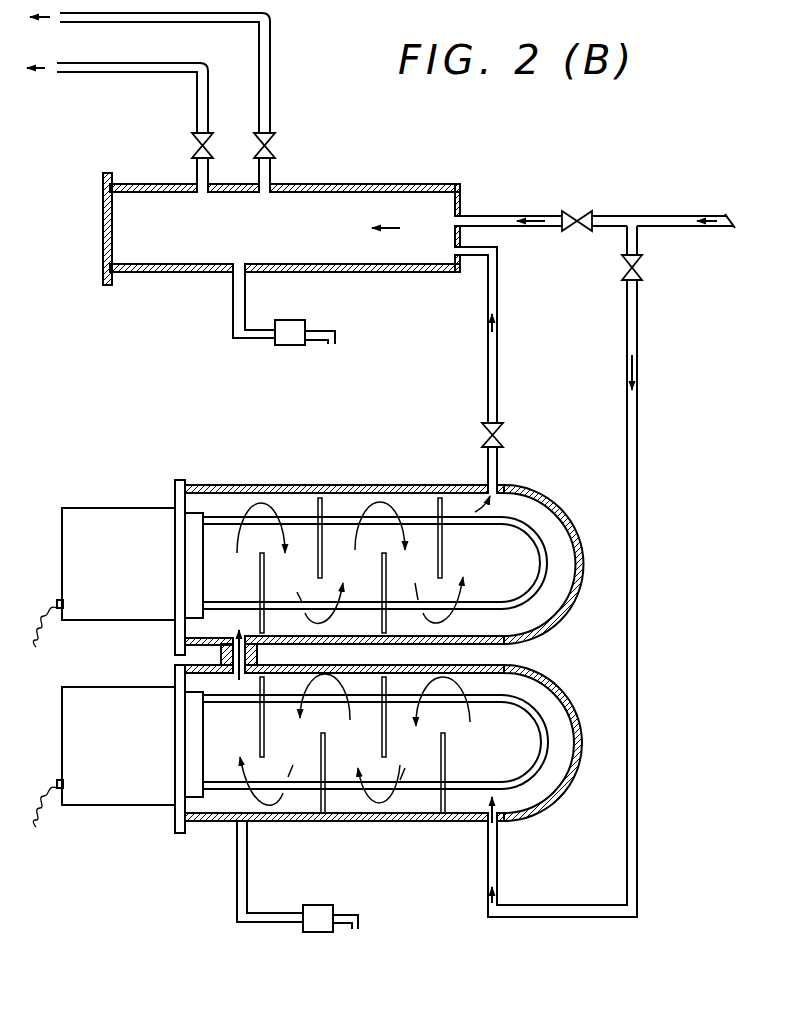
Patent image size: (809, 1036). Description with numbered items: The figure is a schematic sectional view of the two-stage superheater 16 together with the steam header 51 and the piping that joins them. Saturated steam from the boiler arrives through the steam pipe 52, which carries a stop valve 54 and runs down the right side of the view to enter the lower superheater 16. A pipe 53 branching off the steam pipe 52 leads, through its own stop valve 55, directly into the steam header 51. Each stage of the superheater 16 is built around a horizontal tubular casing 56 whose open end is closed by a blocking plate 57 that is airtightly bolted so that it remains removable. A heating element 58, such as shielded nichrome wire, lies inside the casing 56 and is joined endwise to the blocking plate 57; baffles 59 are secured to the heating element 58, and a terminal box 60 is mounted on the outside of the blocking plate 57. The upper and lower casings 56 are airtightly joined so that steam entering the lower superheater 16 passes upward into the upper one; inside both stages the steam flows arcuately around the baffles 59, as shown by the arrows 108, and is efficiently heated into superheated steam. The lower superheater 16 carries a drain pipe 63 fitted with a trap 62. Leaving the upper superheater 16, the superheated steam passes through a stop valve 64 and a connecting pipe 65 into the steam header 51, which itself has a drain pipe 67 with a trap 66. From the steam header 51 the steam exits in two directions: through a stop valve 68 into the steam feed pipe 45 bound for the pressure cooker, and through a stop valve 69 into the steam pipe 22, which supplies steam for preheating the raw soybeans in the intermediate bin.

The superheater 16 is at (313, 484).
The steam pipe 22 is at (107, 75).
The steam feed pipe 45 is at (272, 29).
The steam header 51 is at (361, 183).
The steam pipe 52 is at (638, 424).
The pipe 53 is at (535, 213).
The stop valve 54 is at (642, 268).
The stop valve 55 is at (590, 212).
The horizontal tubular casing 56 is at (415, 485).
The blocking plate 57 is at (174, 492).
The heating element 58 is at (478, 528).
The baffles 59 is at (382, 568).
The terminal box 60 is at (72, 556).
The trap 62 is at (325, 905).
The drain pipe 63 is at (250, 924).
The stop valve 64 is at (503, 433).
The connecting pipe 65 is at (487, 366).
The trap 66 is at (285, 349).
The drain pipe 67 is at (232, 332).
The stop valve 68 is at (275, 138).
The stop valve 69 is at (192, 142).
The arrows 108 is at (287, 553).